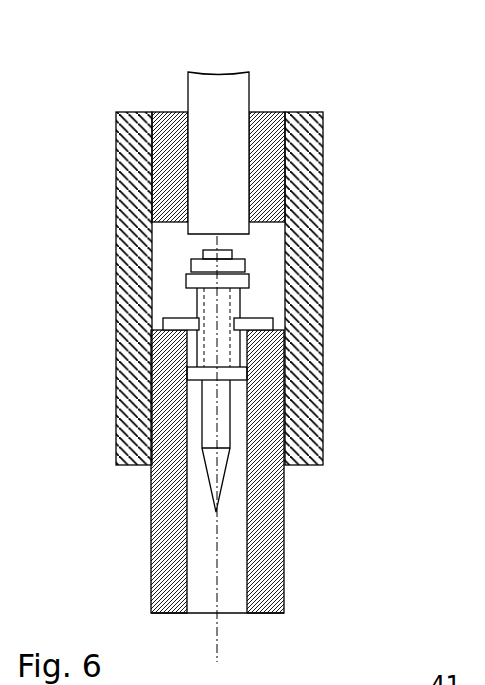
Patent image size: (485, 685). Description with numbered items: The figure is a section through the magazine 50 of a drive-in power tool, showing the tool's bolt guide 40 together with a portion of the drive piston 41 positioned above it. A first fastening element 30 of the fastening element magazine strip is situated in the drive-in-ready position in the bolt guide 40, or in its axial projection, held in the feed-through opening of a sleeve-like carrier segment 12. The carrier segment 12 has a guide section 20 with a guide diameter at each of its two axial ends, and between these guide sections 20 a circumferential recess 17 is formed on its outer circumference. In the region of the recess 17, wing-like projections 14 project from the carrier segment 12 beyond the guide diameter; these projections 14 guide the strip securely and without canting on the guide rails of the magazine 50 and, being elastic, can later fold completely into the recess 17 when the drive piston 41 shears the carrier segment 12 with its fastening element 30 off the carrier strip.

The drive piston 41 is at (195, 72).
The magazine 50 is at (115, 143).
The bolt guide 40 is at (150, 545).
The carrier segment 12 is at (197, 295).
The circumferential recess 17 is at (242, 296).
The wing-like projections 14 is at (265, 326).
The guide section 20 is at (240, 373).
The fastening element 30 is at (223, 411).